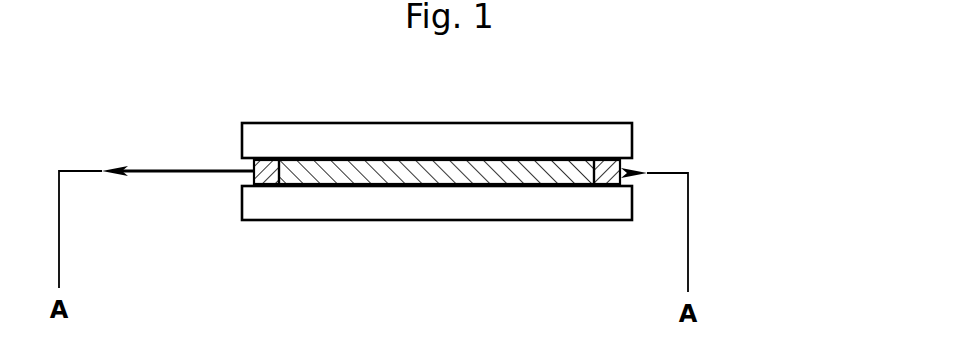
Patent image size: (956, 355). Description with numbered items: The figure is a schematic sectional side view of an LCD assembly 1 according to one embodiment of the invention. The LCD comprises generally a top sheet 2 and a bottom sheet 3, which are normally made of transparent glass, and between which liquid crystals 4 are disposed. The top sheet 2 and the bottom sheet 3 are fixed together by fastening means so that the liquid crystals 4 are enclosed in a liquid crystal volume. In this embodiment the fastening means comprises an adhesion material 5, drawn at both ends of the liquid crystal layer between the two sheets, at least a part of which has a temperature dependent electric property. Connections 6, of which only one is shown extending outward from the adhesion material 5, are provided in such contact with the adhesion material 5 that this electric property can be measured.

The LCD assembly 1 is at (708, 146).
The top sheet 2 is at (537, 137).
The bottom sheet 3 is at (494, 202).
The liquid crystals 4 is at (371, 184).
The adhesion material 5 is at (262, 188).
The connections 6 is at (165, 173).